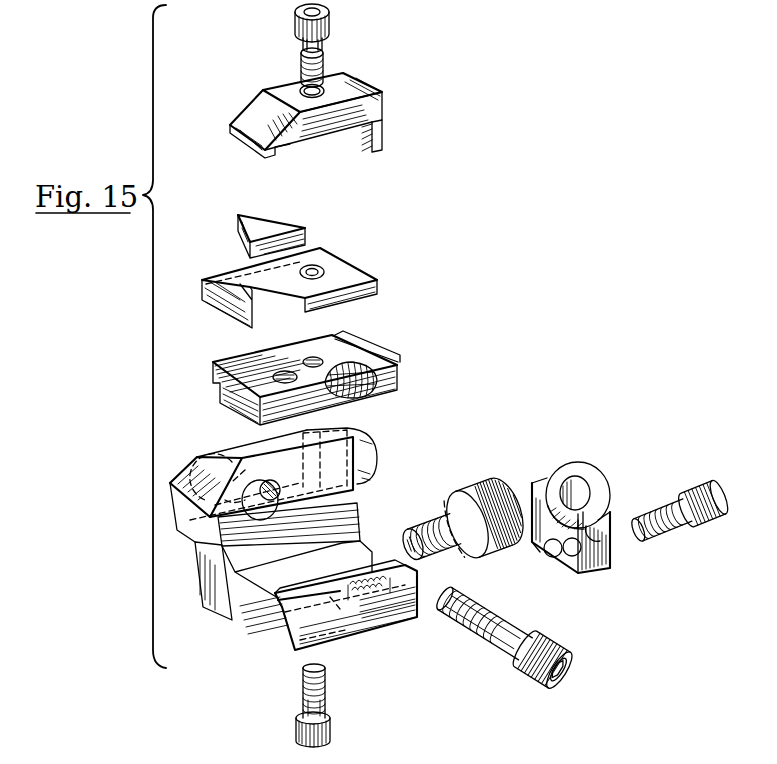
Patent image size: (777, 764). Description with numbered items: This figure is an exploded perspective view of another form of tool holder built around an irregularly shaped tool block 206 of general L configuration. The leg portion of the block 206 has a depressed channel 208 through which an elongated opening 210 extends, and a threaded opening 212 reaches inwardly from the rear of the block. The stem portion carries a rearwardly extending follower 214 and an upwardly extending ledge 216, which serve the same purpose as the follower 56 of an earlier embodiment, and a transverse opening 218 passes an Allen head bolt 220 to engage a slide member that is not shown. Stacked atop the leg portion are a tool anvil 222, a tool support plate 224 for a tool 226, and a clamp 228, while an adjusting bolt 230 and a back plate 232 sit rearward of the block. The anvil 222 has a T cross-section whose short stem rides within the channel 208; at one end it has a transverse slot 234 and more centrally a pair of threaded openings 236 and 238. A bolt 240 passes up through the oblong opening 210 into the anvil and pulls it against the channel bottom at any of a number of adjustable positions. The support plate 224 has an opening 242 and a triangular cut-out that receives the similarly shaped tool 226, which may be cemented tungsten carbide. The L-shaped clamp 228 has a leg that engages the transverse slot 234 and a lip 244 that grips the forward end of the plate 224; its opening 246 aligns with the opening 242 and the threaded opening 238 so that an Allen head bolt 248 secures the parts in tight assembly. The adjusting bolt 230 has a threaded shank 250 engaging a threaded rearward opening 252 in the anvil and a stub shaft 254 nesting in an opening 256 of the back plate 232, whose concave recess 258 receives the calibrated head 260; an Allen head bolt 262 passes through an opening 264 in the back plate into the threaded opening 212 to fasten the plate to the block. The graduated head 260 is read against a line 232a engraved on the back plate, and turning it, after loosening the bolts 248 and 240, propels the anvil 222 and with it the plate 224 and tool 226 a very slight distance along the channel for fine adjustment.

The follower 56 is at (218, 742).
The tool block 206 is at (321, 591).
The depressed channel 208 is at (265, 592).
The elongated opening 210 is at (383, 620).
The threaded opening 212 is at (420, 585).
The follower 214 is at (368, 458).
The ledge 216 is at (288, 474).
The transverse opening 218 is at (272, 490).
The Allen head bolt 220 is at (500, 660).
The tool anvil 222 is at (308, 364).
The tool support plate 224 is at (315, 268).
The tool 226 is at (268, 228).
The clamp 228 is at (322, 136).
The adjusting bolt 230 is at (452, 509).
The back plate 232 is at (611, 518).
The line 232a is at (620, 475).
The transverse slot 234 is at (347, 338).
The threaded opening 236 is at (273, 378).
The threaded opening 238 is at (311, 355).
The bolt 240 is at (331, 740).
The opening 242 is at (320, 268).
The lip 244 is at (272, 152).
The opening 246 is at (300, 86).
The Allen head bolt 248 is at (325, 40).
The threaded shank 250 is at (430, 538).
The threaded rearward opening 252 is at (380, 378).
The stub shaft 254 is at (466, 509).
The opening 256 is at (588, 494).
The concave recess 258 is at (536, 556).
The head 260 is at (453, 464).
The Allen head bolt 262 is at (700, 522).
The opening 264 is at (552, 562).